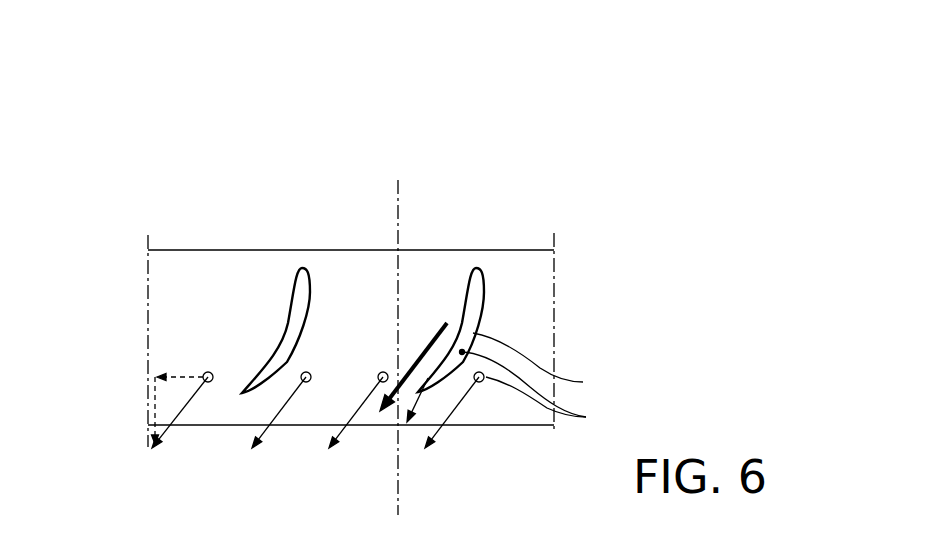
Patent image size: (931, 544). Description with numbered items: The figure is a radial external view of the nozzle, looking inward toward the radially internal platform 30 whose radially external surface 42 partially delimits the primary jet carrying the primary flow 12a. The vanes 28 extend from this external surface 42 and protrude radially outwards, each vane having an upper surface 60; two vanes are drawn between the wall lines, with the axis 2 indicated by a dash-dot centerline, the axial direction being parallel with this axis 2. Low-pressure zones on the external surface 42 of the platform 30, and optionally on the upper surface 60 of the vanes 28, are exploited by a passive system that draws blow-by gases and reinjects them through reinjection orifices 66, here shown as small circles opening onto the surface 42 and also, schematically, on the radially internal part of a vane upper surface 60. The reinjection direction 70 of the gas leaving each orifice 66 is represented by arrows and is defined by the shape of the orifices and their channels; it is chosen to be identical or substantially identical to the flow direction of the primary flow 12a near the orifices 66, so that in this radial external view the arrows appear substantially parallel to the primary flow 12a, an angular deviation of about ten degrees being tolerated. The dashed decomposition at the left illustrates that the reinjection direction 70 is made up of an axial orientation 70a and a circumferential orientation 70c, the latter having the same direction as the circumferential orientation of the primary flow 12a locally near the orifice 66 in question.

The axis 2 is at (397, 192).
The primary flow 12a is at (424, 340).
The vanes 28 is at (256, 386).
The radially internal platform 30 is at (561, 339).
The radially external surface 42 is at (178, 280).
The upper surface 60 is at (310, 300).
The reinjection orifices 66 is at (307, 377).
The reinjection direction 70 is at (188, 408).
The axial orientation 70a is at (148, 397).
The circumferential orientation 70c is at (177, 375).